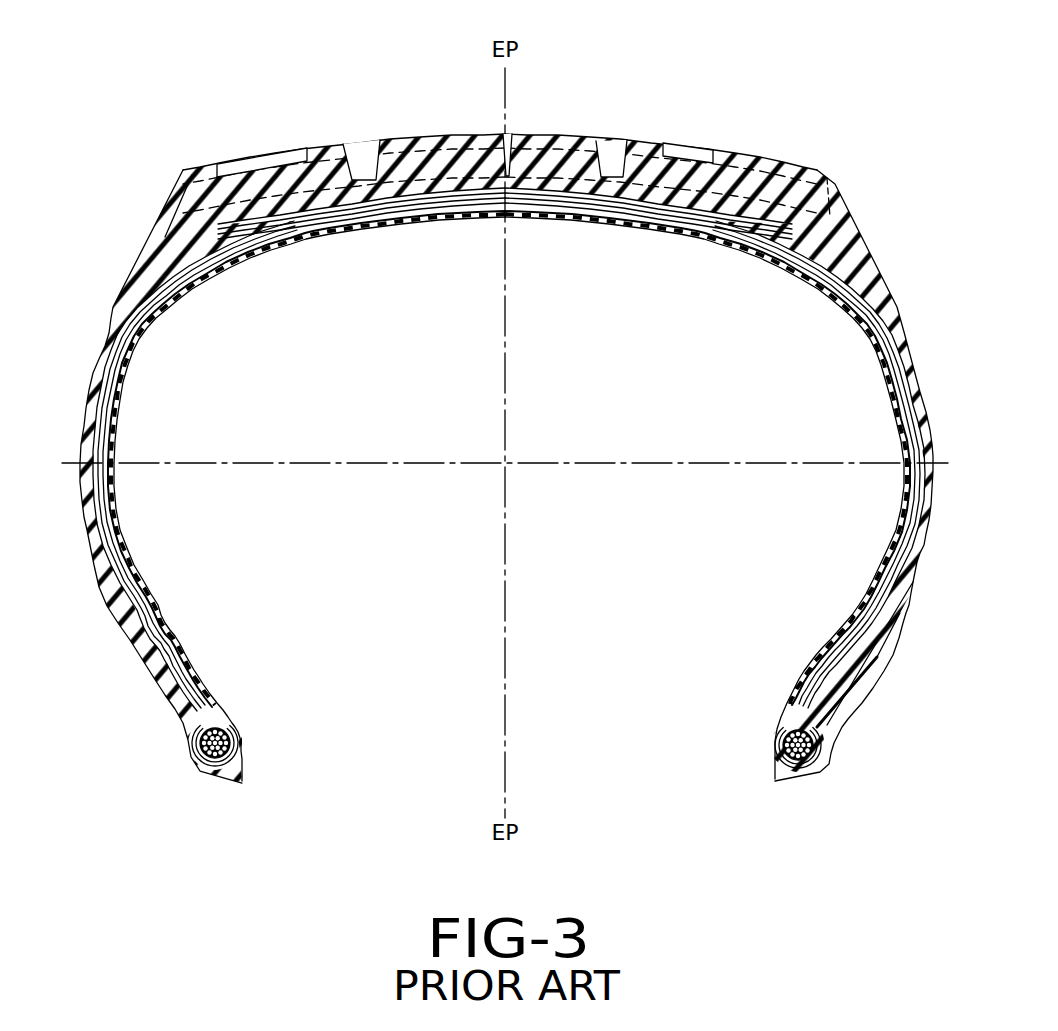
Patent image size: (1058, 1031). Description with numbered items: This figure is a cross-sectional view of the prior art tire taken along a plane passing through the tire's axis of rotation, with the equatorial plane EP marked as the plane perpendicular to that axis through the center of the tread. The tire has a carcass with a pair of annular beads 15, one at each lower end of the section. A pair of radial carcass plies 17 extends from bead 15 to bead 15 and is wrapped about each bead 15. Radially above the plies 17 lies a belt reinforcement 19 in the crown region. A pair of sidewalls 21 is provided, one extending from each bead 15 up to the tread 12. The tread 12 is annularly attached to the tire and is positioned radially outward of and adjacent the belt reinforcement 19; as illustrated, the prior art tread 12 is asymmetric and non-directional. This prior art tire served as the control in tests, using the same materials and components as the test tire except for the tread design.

The tread 12 is at (756, 158).
The annular bead 15 is at (217, 752).
The radial carcass ply 17 is at (128, 582).
The belt reinforcement 19 is at (432, 200).
The sidewall 21 is at (100, 372).